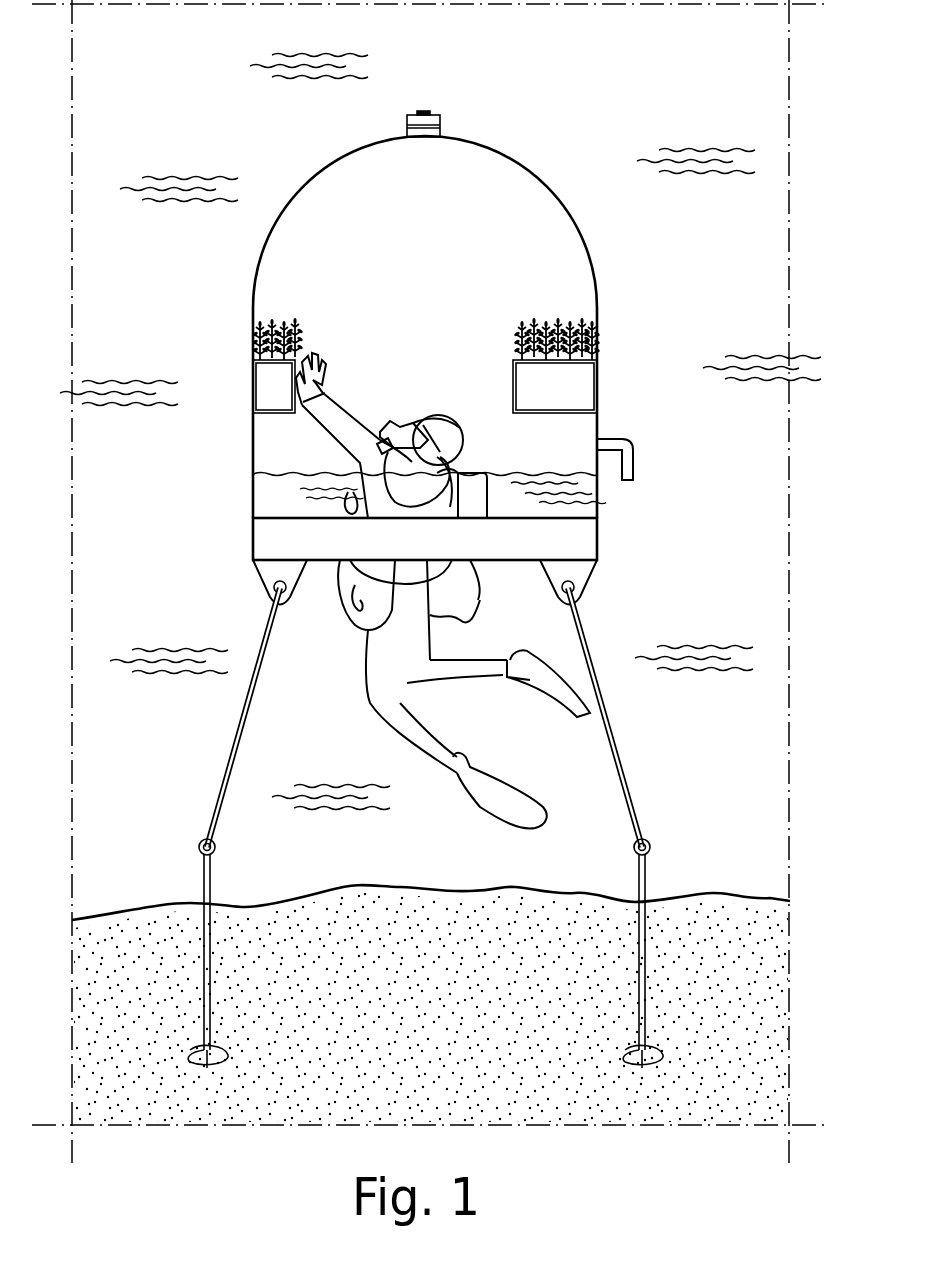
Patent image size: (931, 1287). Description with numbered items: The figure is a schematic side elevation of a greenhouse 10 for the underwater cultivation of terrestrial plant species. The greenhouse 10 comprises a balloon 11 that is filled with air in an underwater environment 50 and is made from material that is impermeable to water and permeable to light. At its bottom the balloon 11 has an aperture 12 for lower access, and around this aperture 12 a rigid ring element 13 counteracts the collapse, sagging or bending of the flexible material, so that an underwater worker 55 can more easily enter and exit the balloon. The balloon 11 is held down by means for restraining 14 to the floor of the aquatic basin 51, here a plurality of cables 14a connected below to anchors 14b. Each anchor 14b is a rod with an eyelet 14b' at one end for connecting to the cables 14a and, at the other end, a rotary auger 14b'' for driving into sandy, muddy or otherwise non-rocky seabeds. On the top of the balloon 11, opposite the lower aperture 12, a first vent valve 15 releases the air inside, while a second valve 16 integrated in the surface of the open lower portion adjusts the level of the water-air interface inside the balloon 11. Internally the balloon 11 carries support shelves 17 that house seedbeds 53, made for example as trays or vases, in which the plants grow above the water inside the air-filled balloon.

The greenhouse 10 is at (584, 121).
The balloon 11 is at (582, 233).
The aperture for lower access 12 is at (512, 572).
The rigid ring element 13 is at (593, 543).
The means for restraining 14 is at (428, 890).
The cables 14a is at (258, 663).
The anchors 14b is at (428, 934).
The eyelet 14b' is at (424, 859).
The rotary auger 14b'' is at (471, 1121).
The first vent valve 15 is at (428, 112).
The second valve 16 is at (628, 440).
The support shelf 17 is at (262, 413).
The underwater environment 50 is at (166, 76).
The floor of the aquatic basin 51 is at (720, 895).
The seedbeds 53 is at (262, 377).
The underwater worker 55 is at (365, 665).